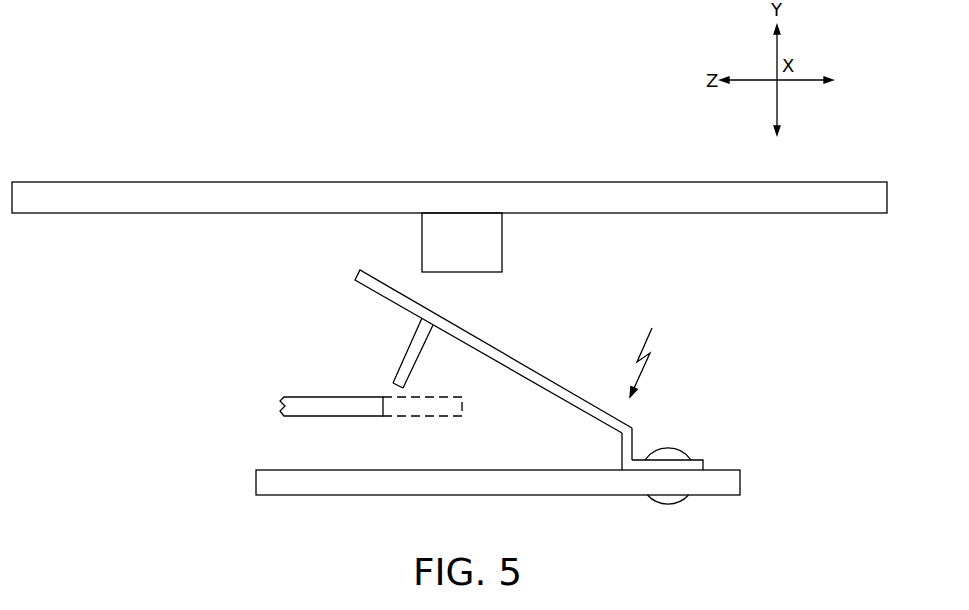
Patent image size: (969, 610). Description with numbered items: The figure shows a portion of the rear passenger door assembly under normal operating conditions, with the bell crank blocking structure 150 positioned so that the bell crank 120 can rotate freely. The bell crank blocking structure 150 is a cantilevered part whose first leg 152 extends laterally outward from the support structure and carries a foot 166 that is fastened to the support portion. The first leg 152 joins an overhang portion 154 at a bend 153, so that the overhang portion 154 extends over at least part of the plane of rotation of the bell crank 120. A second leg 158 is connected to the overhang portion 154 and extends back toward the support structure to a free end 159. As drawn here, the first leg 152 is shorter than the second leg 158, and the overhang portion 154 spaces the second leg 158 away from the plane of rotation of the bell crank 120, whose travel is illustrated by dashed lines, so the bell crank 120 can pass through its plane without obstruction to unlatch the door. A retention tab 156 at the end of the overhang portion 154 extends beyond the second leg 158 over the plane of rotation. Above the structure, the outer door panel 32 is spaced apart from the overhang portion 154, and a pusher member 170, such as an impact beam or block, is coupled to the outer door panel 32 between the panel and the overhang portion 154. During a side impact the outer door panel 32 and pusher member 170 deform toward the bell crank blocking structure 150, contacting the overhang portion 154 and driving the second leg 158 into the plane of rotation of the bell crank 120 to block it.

The outer door panel 32 is at (78, 181).
The pusher member 170 is at (502, 243).
The retention tab 156 is at (378, 281).
The overhang portion 154 is at (543, 376).
The bend 153 is at (633, 424).
The first leg 152 is at (633, 442).
The foot 166 is at (700, 460).
The second leg 158 is at (420, 360).
The free end 159 is at (392, 384).
The bell crank 120 is at (333, 417).
The bell crank blocking structure 150 is at (654, 349).